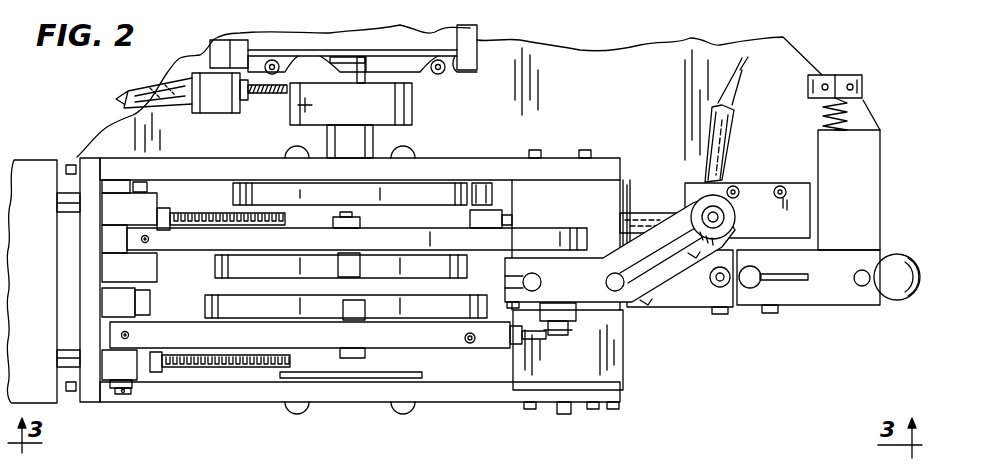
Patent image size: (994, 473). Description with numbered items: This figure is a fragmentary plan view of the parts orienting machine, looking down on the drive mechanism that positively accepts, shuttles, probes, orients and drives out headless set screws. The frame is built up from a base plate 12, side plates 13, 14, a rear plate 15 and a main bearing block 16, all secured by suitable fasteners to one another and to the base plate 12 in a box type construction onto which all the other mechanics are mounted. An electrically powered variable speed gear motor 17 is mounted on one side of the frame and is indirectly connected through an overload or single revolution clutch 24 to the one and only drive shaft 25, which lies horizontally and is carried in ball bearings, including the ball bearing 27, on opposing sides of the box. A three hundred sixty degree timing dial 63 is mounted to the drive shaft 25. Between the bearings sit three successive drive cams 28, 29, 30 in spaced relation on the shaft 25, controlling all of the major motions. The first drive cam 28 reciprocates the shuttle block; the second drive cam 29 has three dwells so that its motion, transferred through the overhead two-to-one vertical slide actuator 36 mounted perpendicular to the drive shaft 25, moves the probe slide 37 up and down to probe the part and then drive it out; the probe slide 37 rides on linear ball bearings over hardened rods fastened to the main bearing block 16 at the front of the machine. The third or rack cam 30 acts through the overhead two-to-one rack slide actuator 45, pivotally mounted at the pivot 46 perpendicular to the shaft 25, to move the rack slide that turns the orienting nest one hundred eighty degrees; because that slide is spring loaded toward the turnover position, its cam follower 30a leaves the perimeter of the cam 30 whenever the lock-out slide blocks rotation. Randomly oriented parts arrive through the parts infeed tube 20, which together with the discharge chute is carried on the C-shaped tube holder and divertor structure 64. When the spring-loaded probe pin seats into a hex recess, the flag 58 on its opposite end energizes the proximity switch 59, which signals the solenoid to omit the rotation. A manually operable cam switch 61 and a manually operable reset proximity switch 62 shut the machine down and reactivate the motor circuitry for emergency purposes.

The base plate 12 is at (493, 372).
The side plate 13 is at (480, 400).
The side plate 14 is at (430, 165).
The rear plate 15 is at (85, 158).
The main bearing block 16 is at (575, 185).
The variable speed gear motor 17 is at (482, 47).
The parts infeed tube 20 is at (748, 292).
The single revolution clutch 24 is at (292, 110).
The drive shaft 25 is at (345, 76).
The ball bearing 27 is at (370, 60).
The first drive cam 28 is at (235, 188).
The second drive cam 29 is at (212, 268).
The third drive cam 30 is at (202, 306).
The cam follower 30a is at (345, 322).
The vertical slide actuator 36 is at (538, 232).
The probe slide 37 is at (678, 283).
The rack slide actuator 45 is at (445, 336).
The pivot 46 is at (127, 395).
The flag 58 is at (730, 210).
The proximity switch 59 is at (735, 140).
The cam switch 61 is at (228, 368).
The reset proximity switch 62 is at (225, 212).
The timing dial 63 is at (405, 379).
The tube holder and divertor structure 64 is at (838, 283).